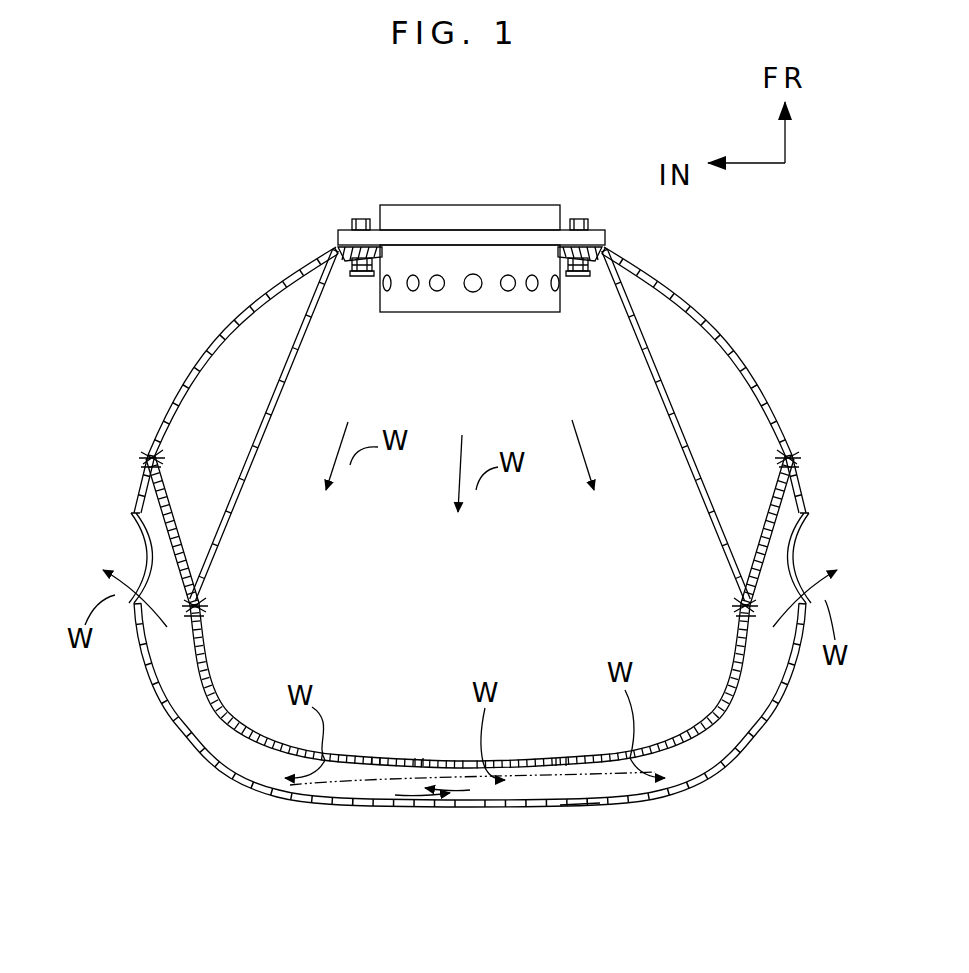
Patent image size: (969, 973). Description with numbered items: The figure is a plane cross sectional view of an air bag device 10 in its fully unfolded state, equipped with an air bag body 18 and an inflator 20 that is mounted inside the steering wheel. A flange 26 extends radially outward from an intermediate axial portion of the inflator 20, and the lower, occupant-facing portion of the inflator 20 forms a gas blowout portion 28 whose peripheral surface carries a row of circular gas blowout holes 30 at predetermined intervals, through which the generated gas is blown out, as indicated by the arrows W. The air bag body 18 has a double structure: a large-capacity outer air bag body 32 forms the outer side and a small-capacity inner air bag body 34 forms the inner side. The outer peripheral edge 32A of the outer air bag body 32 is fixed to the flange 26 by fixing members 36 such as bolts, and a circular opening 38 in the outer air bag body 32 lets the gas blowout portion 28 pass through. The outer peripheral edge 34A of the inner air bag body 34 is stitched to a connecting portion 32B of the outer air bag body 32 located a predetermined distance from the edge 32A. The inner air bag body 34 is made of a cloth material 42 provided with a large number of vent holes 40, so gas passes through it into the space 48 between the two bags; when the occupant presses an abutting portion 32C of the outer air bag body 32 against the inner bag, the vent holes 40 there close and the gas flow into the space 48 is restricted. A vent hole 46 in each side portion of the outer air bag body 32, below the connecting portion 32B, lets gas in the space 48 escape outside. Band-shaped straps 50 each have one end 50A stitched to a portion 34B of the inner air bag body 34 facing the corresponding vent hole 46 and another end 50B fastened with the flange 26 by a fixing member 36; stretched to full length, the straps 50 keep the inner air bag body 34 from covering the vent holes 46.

The air bag device 10 is at (278, 205).
The air bag body 18 is at (467, 585).
The inflator 20 is at (508, 203).
The flange 26 is at (606, 238).
The gas blowout portion 28 is at (473, 294).
The gas blowout holes 30 is at (387, 294).
The outer air bag body 32 is at (467, 573).
The outer peripheral edge 32A is at (330, 250).
The connecting portion 32B is at (147, 452).
The abutting portion 32C is at (528, 778).
The inner air bag body 34 is at (480, 640).
The outer peripheral edge 34A is at (160, 446).
The portion 34B is at (178, 642).
The fixing members 36 is at (356, 273).
The circular opening 38 is at (392, 250).
The vent holes 40 is at (420, 758).
The cloth material 42 is at (562, 758).
The vent hole 46 is at (139, 518).
The space 48 is at (578, 806).
The straps 50 is at (224, 505).
The one end 50A is at (202, 612).
The another end 50B is at (362, 278).